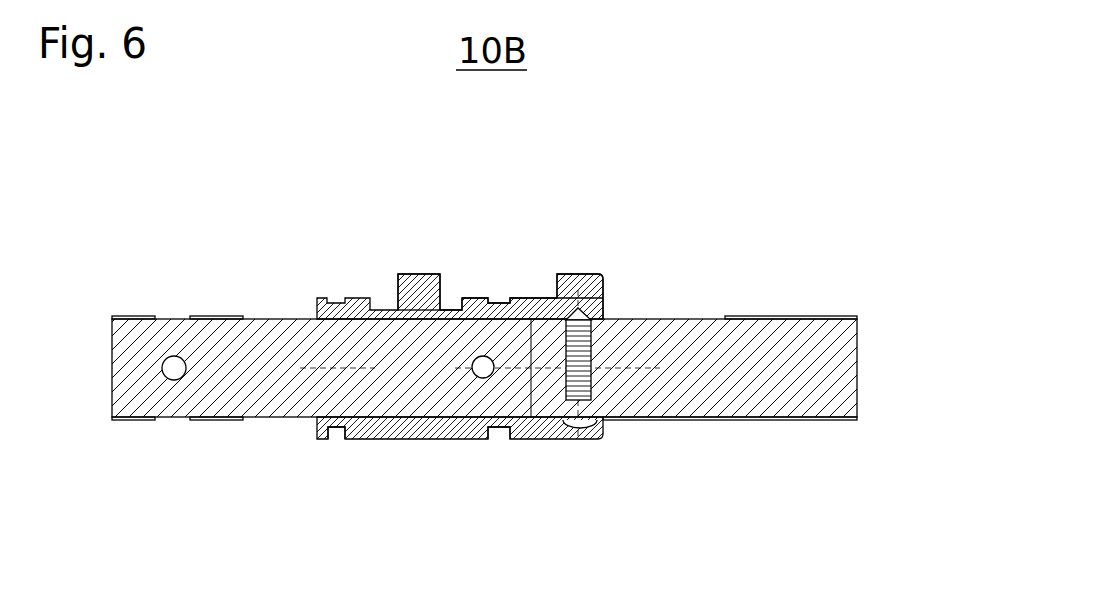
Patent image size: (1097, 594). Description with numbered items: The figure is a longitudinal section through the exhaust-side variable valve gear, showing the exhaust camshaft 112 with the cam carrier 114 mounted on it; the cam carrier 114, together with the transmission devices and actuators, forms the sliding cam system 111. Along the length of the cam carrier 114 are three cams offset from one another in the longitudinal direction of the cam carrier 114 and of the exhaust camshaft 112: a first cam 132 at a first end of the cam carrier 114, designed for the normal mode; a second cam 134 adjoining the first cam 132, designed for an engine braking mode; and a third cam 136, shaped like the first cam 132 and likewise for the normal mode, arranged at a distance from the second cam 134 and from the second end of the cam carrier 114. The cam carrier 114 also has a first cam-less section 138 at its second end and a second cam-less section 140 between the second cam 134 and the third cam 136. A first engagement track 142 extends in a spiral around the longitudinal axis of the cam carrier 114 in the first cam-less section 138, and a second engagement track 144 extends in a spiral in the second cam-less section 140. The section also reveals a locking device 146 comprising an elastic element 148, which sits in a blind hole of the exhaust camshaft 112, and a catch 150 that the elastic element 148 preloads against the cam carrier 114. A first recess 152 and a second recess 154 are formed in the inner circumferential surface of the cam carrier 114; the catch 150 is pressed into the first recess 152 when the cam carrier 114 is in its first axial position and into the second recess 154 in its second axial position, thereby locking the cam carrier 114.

The sliding cam system 111 is at (280, 300).
The exhaust camshaft 112 is at (132, 342).
The cam carrier 114 is at (710, 470).
The first cam 132 is at (603, 294).
The second cam 134 is at (530, 298).
The third cam 136 is at (418, 275).
The first cam-less section 138 is at (320, 282).
The second cam-less section 140 is at (461, 283).
The first engagement track 142 is at (337, 428).
The second engagement track 144 is at (498, 430).
The locking device 146 is at (634, 363).
The elastic element 148 is at (588, 347).
The catch 150 is at (606, 312).
The first recess 152 is at (603, 438).
The second recess 154 is at (435, 357).